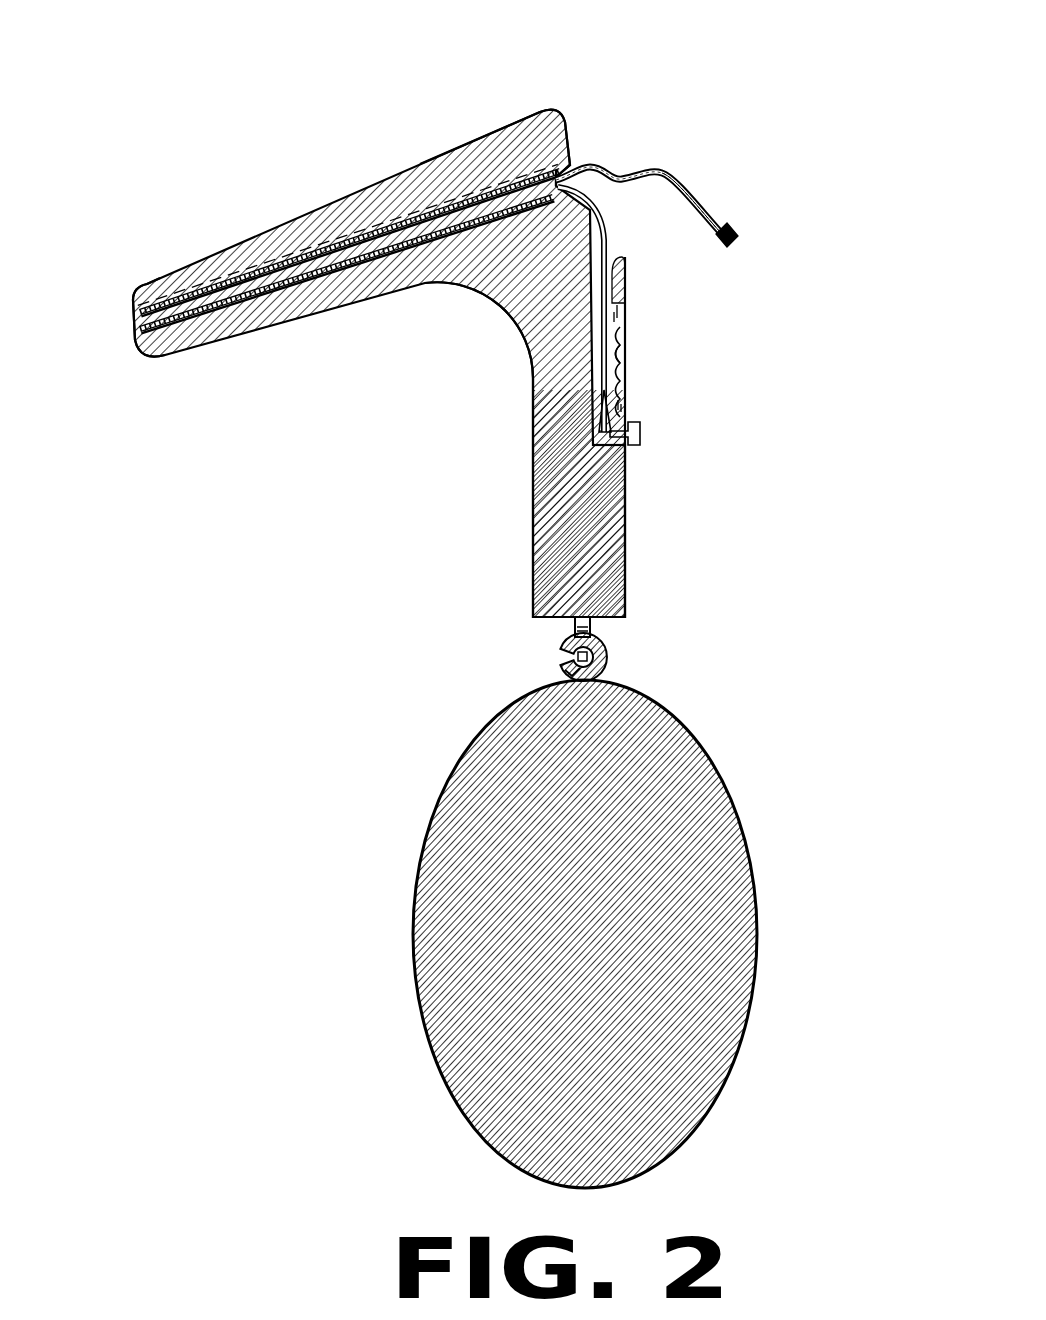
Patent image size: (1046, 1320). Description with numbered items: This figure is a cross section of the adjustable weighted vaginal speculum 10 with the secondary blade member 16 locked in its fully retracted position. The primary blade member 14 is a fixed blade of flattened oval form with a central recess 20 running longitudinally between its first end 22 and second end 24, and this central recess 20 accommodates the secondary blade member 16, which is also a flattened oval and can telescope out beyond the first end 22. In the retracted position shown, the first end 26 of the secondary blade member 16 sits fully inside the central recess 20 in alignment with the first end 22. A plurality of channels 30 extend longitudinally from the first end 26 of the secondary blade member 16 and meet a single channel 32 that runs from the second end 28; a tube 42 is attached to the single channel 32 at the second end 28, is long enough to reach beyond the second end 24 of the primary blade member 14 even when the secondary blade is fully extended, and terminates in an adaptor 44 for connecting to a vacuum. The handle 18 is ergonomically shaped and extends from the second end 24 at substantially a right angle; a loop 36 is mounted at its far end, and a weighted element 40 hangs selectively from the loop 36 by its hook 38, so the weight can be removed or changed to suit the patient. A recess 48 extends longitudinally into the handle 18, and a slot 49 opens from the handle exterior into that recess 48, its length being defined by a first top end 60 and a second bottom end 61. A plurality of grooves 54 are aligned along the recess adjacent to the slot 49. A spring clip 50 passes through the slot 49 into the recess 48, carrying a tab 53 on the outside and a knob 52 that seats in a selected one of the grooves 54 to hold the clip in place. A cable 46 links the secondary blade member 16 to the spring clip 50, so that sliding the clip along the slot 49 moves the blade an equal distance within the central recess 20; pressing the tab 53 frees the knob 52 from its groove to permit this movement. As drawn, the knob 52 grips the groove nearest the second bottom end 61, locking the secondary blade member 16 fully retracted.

The adjustable weighted vaginal speculum 10 is at (813, 387).
The primary blade member 14 is at (495, 150).
The secondary blade member 16 is at (218, 300).
The handle 18 is at (627, 508).
The central recess 20 is at (261, 262).
The first end 22 is at (132, 298).
The second end 24 is at (555, 176).
The first end 26 is at (145, 325).
The second end 28 is at (547, 113).
The plurality of channels 30 is at (170, 322).
The single channel 32 is at (572, 178).
The loop 36 is at (590, 632).
The hook 38 is at (605, 664).
The weighted element 40 is at (470, 920).
The tube 42 is at (618, 175).
The adaptor 44 is at (735, 226).
The cable 46 is at (600, 203).
The recess 48 is at (592, 338).
The slot 49 is at (627, 365).
The spring clip 50 is at (604, 405).
The knob 52 is at (622, 418).
The tab 53 is at (640, 433).
The plurality of grooves 54 is at (623, 330).
The first top end 60 is at (620, 290).
The second bottom end 61 is at (620, 448).